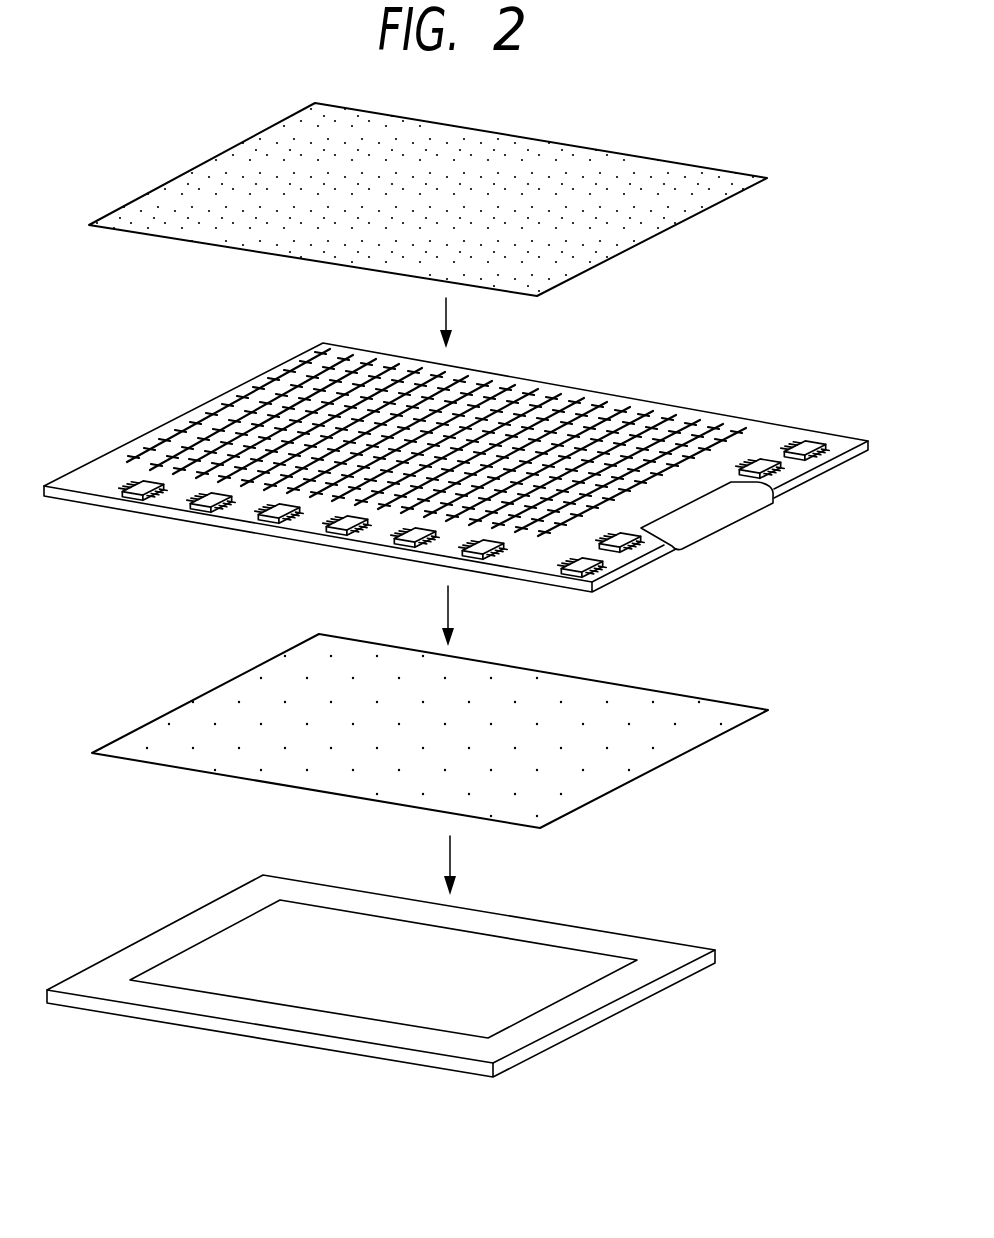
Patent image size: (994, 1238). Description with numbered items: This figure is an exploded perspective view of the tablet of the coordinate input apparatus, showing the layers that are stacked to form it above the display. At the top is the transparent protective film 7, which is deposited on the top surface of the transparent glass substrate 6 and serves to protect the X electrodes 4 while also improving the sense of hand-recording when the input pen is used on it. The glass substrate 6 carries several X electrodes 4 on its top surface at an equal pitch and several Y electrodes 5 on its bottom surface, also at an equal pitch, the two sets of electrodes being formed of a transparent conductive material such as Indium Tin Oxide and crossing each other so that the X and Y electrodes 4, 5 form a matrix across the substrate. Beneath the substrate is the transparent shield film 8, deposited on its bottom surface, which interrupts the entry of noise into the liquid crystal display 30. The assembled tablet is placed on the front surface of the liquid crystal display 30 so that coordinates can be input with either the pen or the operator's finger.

The transparent protective film 7 is at (217, 157).
The X electrodes 4 is at (727, 420).
The Y electrodes 5 is at (148, 448).
The transparent glass substrate 6 is at (838, 438).
The transparent shield film 8 is at (642, 760).
The liquid crystal display 30 is at (665, 952).